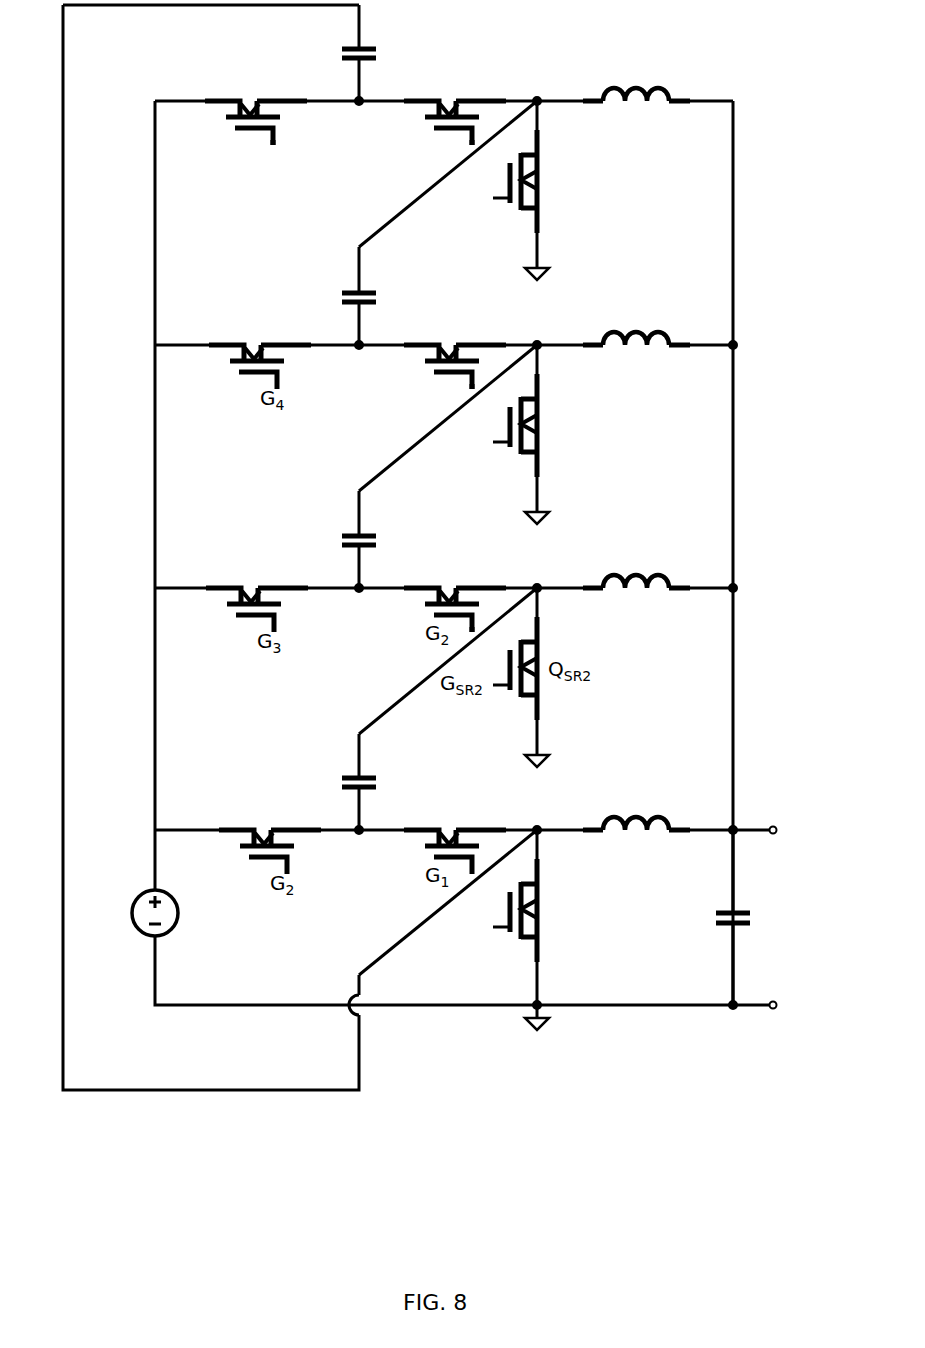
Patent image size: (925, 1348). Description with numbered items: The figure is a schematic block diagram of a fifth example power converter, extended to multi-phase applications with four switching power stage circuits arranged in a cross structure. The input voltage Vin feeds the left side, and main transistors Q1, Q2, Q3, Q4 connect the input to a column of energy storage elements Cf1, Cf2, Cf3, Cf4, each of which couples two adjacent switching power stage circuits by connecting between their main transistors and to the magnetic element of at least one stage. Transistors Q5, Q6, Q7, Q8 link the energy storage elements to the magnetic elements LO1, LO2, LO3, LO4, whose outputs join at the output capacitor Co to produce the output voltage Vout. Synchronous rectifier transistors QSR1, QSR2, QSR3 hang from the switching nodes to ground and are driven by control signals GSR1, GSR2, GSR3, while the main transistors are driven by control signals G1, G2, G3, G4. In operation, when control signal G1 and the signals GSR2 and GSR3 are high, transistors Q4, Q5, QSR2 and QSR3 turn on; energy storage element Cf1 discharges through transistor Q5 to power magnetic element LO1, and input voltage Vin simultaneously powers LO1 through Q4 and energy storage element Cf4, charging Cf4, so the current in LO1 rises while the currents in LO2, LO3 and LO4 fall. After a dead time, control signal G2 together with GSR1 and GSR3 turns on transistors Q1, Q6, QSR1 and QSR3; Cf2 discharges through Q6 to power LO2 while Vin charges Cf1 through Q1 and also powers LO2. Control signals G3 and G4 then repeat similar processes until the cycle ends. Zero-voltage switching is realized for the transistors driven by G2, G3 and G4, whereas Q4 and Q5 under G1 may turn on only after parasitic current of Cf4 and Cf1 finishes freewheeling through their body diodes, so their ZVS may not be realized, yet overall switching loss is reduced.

The transistor Q1 is at (270, 833).
The transistor Q2 is at (257, 591).
The transistor Q3 is at (260, 348).
The transistor Q4 is at (256, 104).
The transistor Q5 is at (455, 831).
The transistor Q6 is at (455, 589).
The transistor Q7 is at (455, 346).
The transistor Q8 is at (455, 102).
The energy storage element Cf1 is at (340, 782).
The energy storage element Cf2 is at (340, 539).
The energy storage element Cf3 is at (340, 296).
The energy storage element Cf4 is at (340, 53).
The transistor QSR1 is at (550, 930).
The transistor QSR2 is at (550, 190).
The transistor QSR3 is at (550, 434).
The control signal GSR1 is at (475, 926).
The control signal GSR2 is at (475, 197).
The control signal GSR3 is at (475, 441).
The control signal G1 is at (268, 154).
The control signal G2 is at (448, 634).
The control signal G3 is at (448, 391).
The control signal G4 is at (448, 147).
The magnetic element LO1 is at (658, 807).
The magnetic element LO2 is at (658, 565).
The magnetic element LO3 is at (658, 322).
The magnetic element LO4 is at (658, 78).
The output capacitor Co is at (715, 917).
The input voltage Vin is at (136, 913).
The output voltage Vout is at (776, 918).